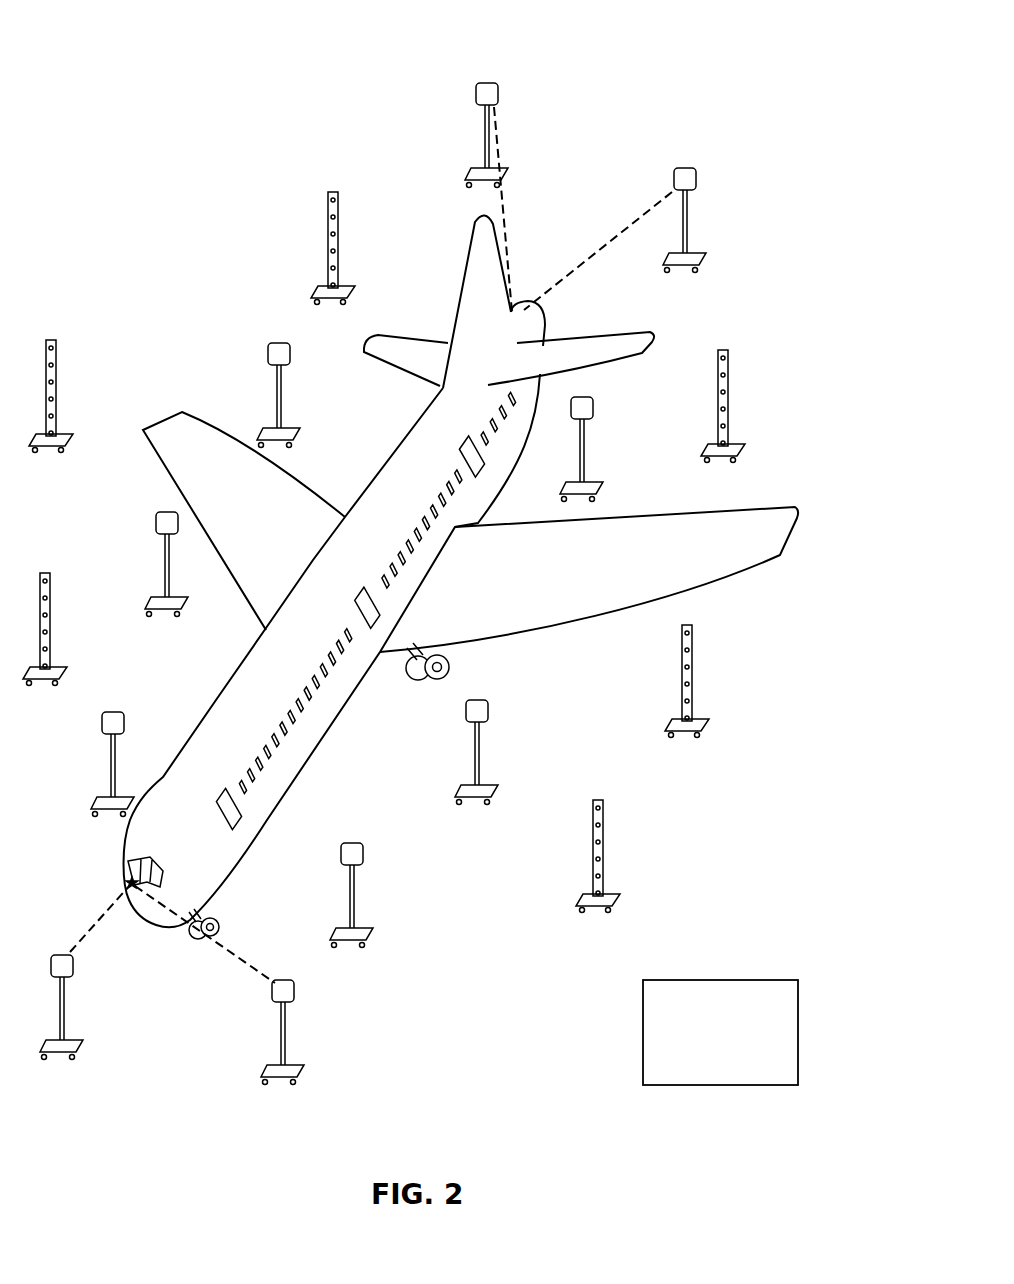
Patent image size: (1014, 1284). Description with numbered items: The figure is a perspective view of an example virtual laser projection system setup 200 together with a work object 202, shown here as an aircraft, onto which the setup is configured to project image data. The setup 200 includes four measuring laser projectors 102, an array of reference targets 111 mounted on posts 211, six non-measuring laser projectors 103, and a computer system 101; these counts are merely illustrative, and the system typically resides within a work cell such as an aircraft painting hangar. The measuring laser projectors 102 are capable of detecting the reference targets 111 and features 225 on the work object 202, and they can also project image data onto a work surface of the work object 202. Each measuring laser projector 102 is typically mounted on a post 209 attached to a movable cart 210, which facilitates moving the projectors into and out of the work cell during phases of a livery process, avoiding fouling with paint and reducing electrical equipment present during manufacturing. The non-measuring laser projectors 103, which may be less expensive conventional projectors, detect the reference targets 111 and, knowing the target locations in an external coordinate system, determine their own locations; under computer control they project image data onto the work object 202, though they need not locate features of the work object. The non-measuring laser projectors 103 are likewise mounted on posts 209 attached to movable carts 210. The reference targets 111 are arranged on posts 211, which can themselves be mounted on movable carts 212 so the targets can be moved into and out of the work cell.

The virtual laser projection system setup 200 is at (140, 66).
The work object 202 is at (315, 747).
The features 225 is at (127, 885).
The computer system 101 is at (662, 1080).
The measuring laser projector 102 is at (476, 100).
The non-measuring laser projector 103 is at (290, 360).
The post 209 is at (281, 395).
The movable cart 210 is at (301, 433).
The post 211 is at (337, 204).
The reference target 111 is at (337, 243).
The movable cart 212 is at (352, 295).